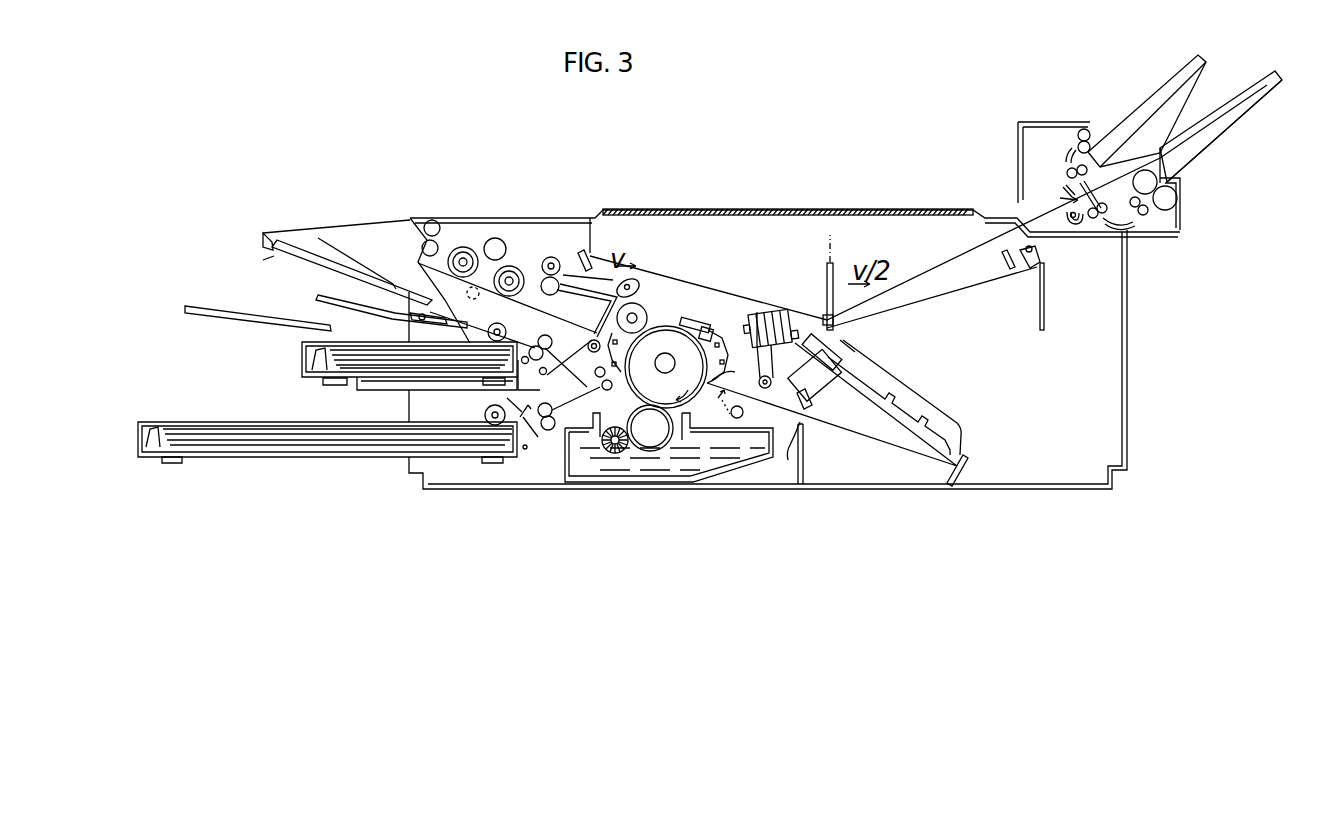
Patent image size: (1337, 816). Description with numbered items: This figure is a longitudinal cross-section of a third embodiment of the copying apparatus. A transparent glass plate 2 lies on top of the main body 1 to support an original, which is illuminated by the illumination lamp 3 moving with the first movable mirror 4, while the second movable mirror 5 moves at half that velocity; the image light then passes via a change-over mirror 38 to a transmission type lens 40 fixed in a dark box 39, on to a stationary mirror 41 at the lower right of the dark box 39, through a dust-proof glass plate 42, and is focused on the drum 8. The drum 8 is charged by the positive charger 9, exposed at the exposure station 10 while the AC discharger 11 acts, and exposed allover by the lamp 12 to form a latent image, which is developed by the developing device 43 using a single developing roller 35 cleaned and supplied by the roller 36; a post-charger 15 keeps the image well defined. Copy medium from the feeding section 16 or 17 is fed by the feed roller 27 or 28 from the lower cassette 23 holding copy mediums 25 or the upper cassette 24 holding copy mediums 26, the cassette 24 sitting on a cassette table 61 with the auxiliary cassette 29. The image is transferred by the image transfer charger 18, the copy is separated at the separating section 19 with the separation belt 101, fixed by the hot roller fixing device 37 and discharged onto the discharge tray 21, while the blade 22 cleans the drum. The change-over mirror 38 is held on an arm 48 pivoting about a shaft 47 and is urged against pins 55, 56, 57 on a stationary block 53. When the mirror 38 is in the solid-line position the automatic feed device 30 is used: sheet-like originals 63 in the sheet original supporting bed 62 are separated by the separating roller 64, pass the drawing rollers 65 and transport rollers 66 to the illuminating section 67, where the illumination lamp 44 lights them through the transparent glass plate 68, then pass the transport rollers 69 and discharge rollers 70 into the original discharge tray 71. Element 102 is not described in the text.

The main body 1 is at (687, 489).
The transparent glass plate 2 is at (772, 208).
The illumination lamp 3 is at (1045, 270).
The first movable mirror 4 is at (590, 262).
The second movable mirror 5 is at (833, 240).
The drum 8 is at (704, 326).
The positive charger 9 is at (728, 342).
The exposure station 10 is at (717, 402).
The AC discharger 11 is at (740, 372).
The allover exposure lamp 12 is at (744, 412).
The post-charger 15 is at (588, 378).
The feeding section 16 is at (555, 466).
The feeding section 17 is at (516, 334).
The image transfer charger 18 is at (630, 350).
The separating section 19 is at (645, 310).
The discharge tray 21 is at (378, 242).
The blade 22 is at (715, 330).
The lower cassette 23 is at (238, 456).
The upper cassette 24 is at (318, 372).
The copy mediums 25 is at (330, 457).
The copy mediums 26 is at (385, 376).
The feed roller 27 is at (485, 415).
The feed roller 28 is at (488, 335).
The auxiliary cassette 29 is at (300, 332).
The automatic feed device 30 is at (1066, 138).
The developing roller 35 is at (650, 442).
The roller 36 is at (610, 453).
The hot roller fixing device 37 is at (478, 250).
The change-over mirror 38 is at (775, 312).
The dark box 39 is at (912, 395).
The transmission type lens 40 is at (858, 350).
The stationary mirror 41 is at (968, 465).
The dust-proof glass plate 42 is at (790, 448).
The developing device 43 is at (622, 475).
The illumination lamp 44 is at (1074, 224).
The shaft 47 is at (812, 402).
The arm 48 is at (810, 377).
The stationary block 53 is at (765, 310).
The pin 55 is at (755, 310).
The pin 56 is at (834, 327).
The pin 57 is at (838, 347).
The cassette table 61 is at (382, 305).
The sheet original supporting bed 62 is at (1236, 90).
The sheet-like originals 63 is at (1242, 110).
The separating roller 64 is at (1178, 204).
The drawing rollers 65 is at (1150, 212).
The transport rollers 66 is at (1094, 218).
The illuminating section 67 is at (1060, 198).
The transparent glass plate 68 is at (1068, 178).
The transport rollers 69 is at (1068, 160).
The discharge rollers 70 is at (1092, 132).
The original discharge tray 71 is at (1158, 85).
The separation belt 101 is at (644, 280).
The plate 102 is at (692, 318).